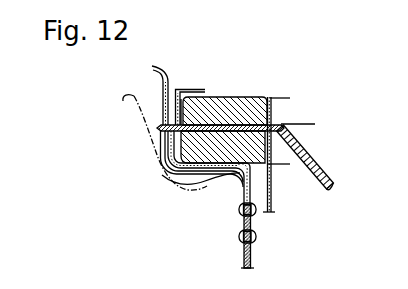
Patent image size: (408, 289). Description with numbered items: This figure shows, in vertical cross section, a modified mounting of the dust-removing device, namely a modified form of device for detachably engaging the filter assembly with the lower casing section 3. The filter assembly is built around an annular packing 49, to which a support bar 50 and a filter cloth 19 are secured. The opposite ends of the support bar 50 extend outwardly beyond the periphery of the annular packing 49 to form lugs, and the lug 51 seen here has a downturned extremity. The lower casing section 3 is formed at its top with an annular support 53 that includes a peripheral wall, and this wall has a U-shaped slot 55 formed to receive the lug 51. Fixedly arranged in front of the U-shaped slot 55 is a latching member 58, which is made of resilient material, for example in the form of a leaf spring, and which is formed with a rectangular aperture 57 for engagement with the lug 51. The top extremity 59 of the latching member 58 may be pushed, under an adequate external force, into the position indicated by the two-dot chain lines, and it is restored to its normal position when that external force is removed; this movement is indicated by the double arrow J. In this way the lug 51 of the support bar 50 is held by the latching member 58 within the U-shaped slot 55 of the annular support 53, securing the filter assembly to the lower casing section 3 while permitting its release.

The lower casing section 3 is at (252, 254).
The filter cloth 19 is at (272, 198).
The annular packing 49 is at (237, 110).
The support bar 50 is at (319, 168).
The lug 51 is at (159, 130).
The annular support 53 is at (207, 170).
The U-shaped slot 55 is at (181, 91).
The rectangular aperture 57 is at (168, 142).
The latching member 58 is at (166, 173).
The top extremity 59 is at (164, 73).
The double arrow J is at (148, 85).